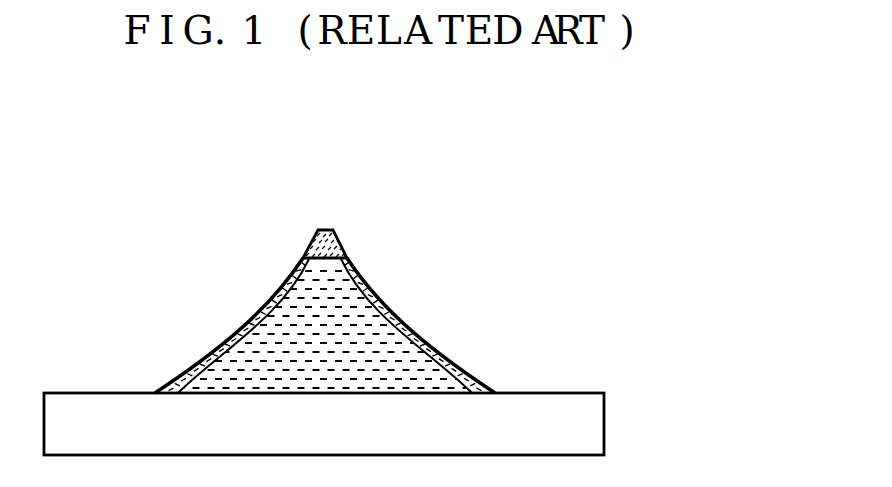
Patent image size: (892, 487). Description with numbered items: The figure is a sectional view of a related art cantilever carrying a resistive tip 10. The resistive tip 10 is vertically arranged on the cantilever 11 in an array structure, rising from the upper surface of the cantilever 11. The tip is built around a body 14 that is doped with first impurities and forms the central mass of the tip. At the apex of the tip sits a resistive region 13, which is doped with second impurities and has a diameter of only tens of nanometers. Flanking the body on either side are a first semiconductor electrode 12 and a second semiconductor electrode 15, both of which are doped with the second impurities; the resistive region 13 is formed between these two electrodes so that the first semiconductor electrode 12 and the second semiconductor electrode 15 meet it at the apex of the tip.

The resistive tip 10 is at (477, 247).
The cantilever 11 is at (537, 403).
The first semiconductor electrode 12 is at (244, 322).
The resistive region 13 is at (338, 231).
The body 14 is at (342, 350).
The second semiconductor electrode 15 is at (406, 328).